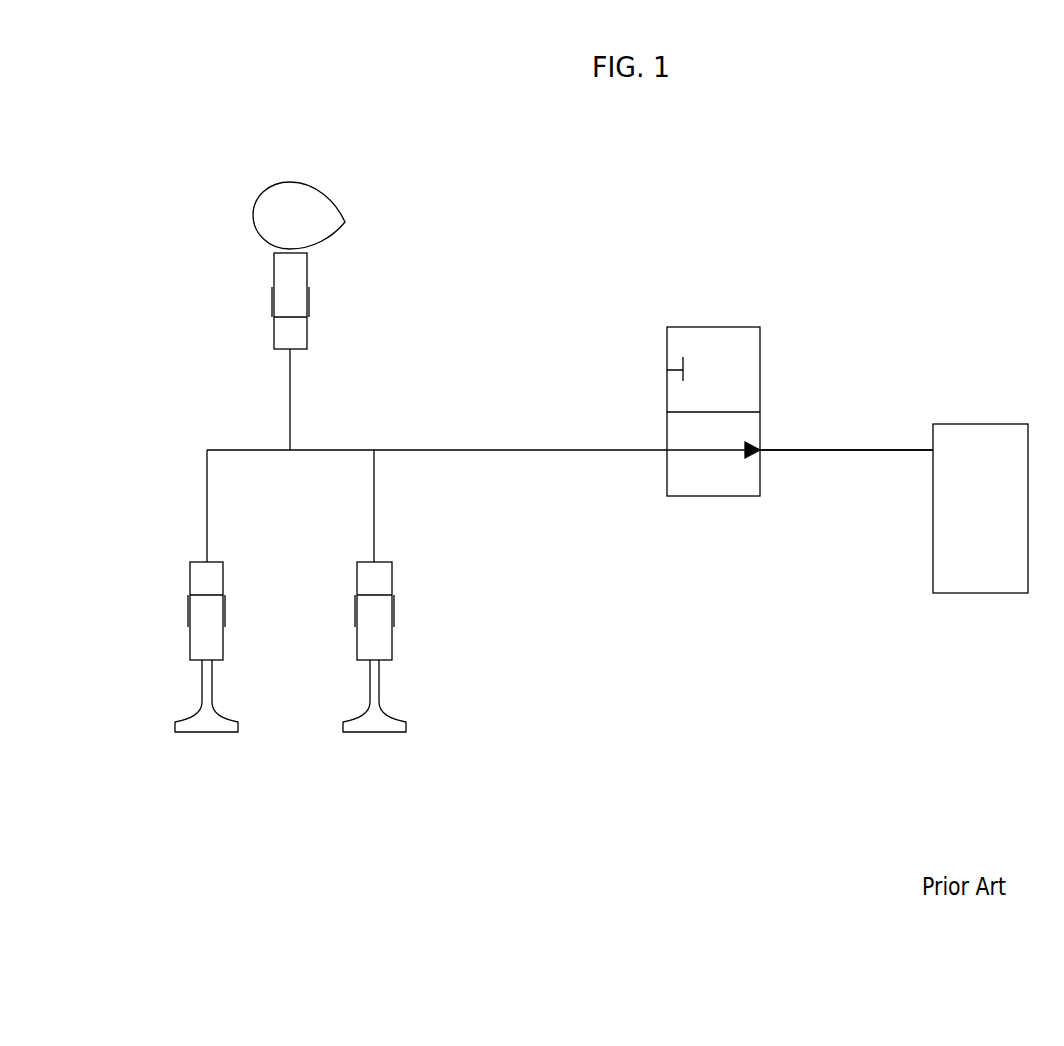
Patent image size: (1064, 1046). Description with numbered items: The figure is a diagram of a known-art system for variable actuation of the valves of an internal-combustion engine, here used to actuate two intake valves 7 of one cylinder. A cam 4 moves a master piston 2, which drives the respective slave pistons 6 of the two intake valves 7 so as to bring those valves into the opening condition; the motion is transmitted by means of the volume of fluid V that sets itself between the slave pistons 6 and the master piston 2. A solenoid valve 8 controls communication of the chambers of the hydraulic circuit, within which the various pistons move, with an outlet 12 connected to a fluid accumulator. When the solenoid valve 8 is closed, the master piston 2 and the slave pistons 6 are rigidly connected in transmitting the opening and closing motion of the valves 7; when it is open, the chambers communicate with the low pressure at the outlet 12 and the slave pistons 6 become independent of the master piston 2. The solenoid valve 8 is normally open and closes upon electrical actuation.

The cam 4 is at (312, 200).
The master piston 2 is at (295, 270).
The volume of fluid V is at (245, 448).
The slave pistons 6 is at (198, 637).
The intake valves 7 is at (198, 715).
The solenoid valve 8 is at (718, 327).
The outlet 12 is at (783, 452).